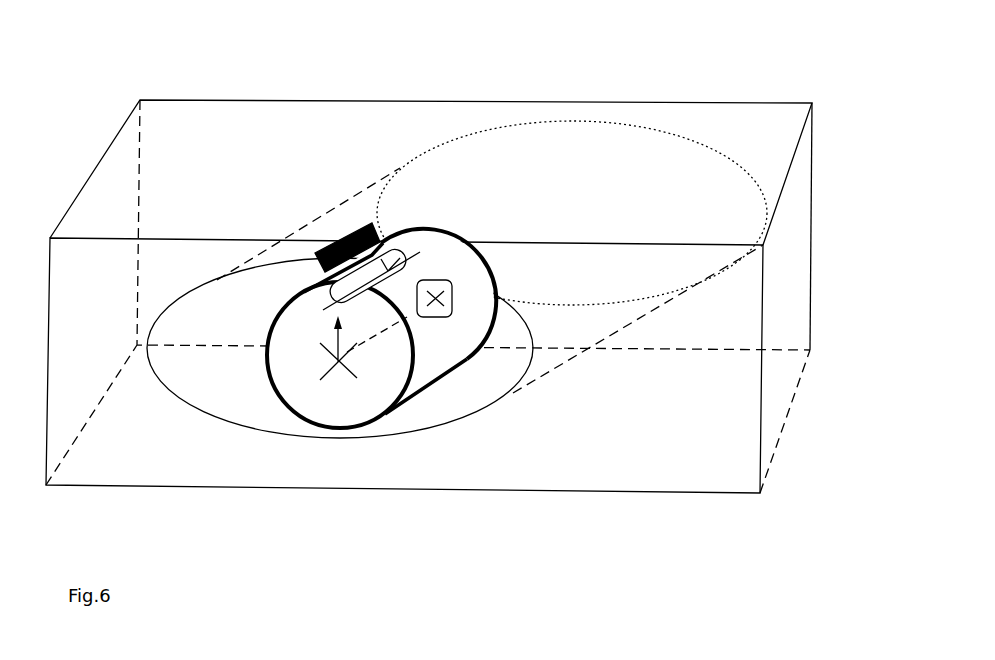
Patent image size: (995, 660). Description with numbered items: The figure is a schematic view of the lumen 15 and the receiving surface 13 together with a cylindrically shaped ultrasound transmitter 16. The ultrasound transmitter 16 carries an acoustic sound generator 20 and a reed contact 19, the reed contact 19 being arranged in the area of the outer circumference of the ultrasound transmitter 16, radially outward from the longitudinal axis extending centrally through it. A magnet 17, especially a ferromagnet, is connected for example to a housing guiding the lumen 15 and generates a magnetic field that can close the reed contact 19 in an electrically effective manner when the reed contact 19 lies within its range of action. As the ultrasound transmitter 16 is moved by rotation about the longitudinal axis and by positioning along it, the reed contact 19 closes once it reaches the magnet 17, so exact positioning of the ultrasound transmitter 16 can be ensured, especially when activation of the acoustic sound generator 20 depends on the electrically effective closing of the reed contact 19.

The receiving surface 13 is at (615, 122).
The lumen 15 is at (762, 450).
The ultrasound transmitter 16 is at (277, 397).
The magnet 17 is at (350, 224).
The reed contact 19 is at (405, 253).
The acoustic sound generator 20 is at (452, 281).